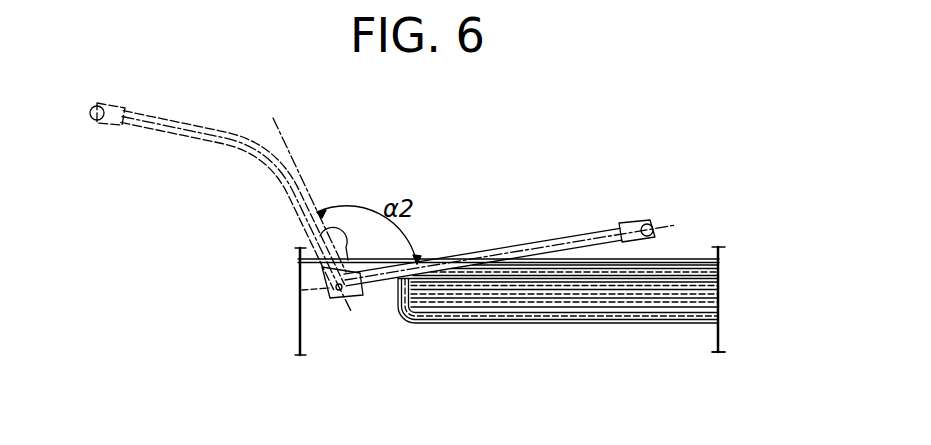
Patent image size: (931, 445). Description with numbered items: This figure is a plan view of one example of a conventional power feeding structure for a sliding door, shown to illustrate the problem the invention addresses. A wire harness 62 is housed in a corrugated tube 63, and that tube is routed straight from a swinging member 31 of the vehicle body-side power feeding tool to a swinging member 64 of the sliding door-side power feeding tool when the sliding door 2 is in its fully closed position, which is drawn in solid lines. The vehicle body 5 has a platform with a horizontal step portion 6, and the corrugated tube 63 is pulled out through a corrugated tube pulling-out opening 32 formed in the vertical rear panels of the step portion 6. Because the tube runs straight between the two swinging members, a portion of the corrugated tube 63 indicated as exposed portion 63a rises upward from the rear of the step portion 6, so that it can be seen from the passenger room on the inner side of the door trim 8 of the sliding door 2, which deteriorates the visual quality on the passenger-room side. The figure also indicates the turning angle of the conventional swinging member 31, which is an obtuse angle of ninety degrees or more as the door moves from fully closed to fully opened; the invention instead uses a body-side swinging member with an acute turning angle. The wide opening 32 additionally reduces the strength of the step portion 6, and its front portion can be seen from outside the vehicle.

The sliding door 2 is at (725, 251).
The vehicle body 5 is at (723, 335).
The horizontal step portion 6 is at (573, 292).
The door trim 8 is at (720, 285).
The swinging member 31 is at (348, 297).
The corrugated tube pulling-out opening 32 is at (318, 236).
The wire harness 62 is at (553, 228).
The corrugated tube 63 is at (168, 133).
The exposed portion 63a is at (417, 272).
The swinging member 64 is at (117, 104).